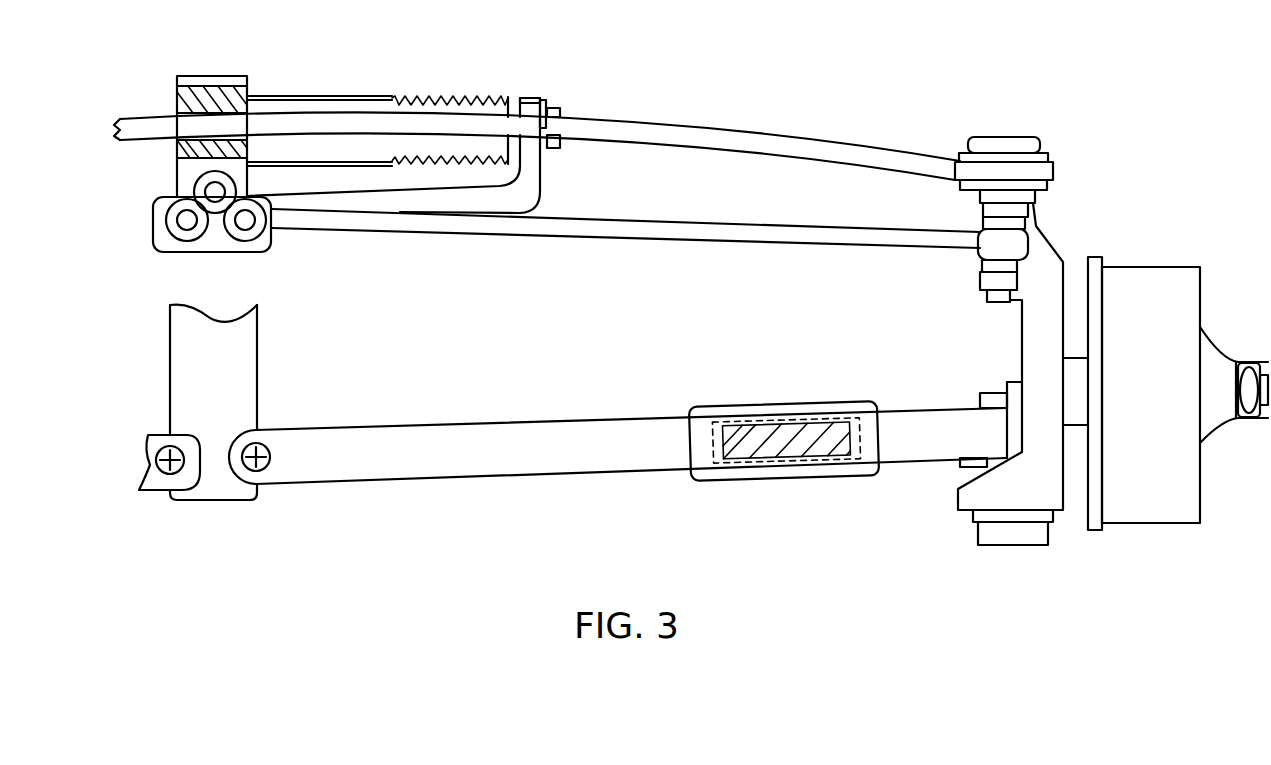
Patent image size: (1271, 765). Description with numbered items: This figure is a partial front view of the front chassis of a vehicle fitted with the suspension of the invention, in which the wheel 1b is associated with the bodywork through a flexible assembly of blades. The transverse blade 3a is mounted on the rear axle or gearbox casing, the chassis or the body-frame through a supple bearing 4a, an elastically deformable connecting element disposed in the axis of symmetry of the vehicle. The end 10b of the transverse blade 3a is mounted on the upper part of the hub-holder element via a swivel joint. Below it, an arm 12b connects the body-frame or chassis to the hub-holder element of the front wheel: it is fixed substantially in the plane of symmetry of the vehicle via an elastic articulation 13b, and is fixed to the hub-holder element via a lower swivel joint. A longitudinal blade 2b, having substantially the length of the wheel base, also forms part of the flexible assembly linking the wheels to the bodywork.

The wheel 1b is at (1155, 210).
The longitudinal blade 2b is at (770, 448).
The transverse blade 3a is at (713, 127).
The supple bearing 4a is at (229, 92).
The end of the transverse blade 10b is at (986, 137).
The arm 12b is at (506, 458).
The elastic articulation 13b is at (267, 464).